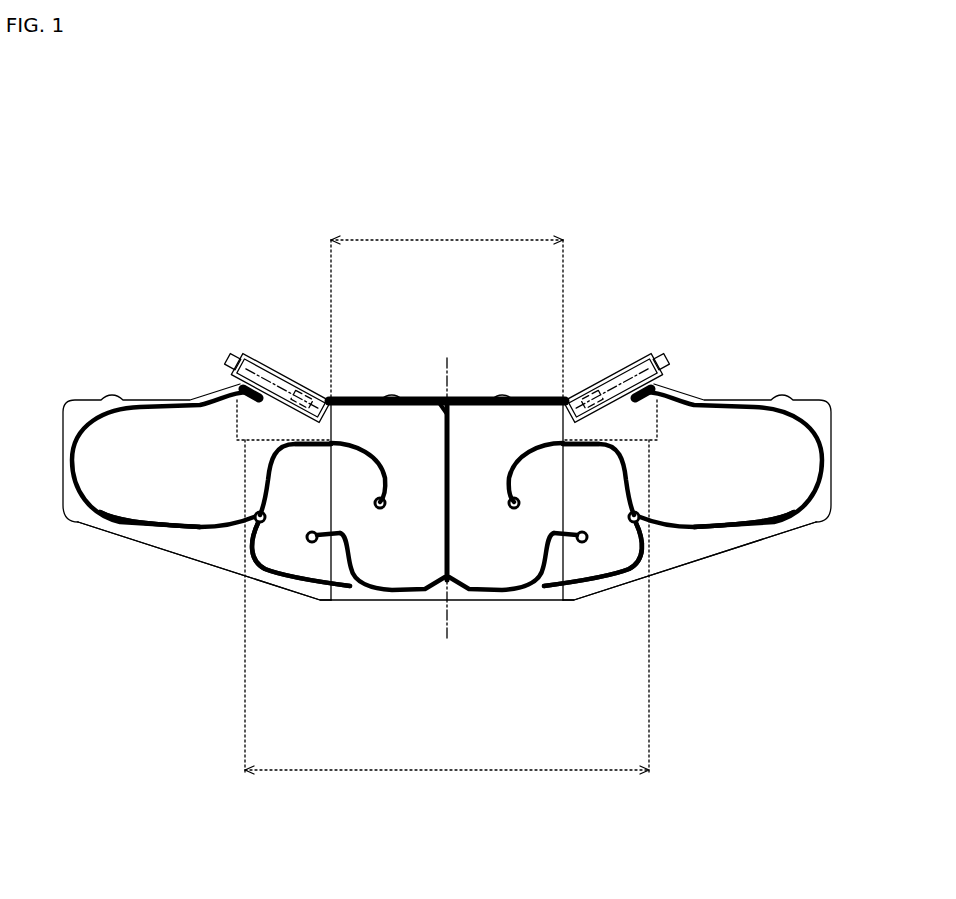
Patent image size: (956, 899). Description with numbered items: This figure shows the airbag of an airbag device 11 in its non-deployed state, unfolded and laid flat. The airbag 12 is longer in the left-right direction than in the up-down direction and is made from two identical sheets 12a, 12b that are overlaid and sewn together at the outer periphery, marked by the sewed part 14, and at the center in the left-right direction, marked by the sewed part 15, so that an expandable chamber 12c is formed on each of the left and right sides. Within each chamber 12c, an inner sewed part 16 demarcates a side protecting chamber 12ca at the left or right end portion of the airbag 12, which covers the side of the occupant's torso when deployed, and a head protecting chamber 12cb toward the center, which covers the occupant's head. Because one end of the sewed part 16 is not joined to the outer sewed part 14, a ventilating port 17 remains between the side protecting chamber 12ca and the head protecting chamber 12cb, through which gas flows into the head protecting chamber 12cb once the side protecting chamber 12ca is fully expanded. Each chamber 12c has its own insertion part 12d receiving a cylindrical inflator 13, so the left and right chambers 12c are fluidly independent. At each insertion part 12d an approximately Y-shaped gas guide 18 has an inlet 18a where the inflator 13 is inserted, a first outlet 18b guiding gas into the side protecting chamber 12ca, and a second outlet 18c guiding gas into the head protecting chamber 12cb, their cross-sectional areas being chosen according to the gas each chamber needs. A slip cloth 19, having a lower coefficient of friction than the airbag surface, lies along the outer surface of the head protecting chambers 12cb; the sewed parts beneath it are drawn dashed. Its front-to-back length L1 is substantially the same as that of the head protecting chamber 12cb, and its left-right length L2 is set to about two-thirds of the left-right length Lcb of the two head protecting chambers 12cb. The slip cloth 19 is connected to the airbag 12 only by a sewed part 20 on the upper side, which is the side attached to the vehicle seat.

The airbag device 11 is at (386, 318).
The airbag 12 is at (460, 397).
The sheet 12a is at (690, 540).
The sheet 12b is at (447, 561).
The chamber 12c is at (108, 636).
The side protecting chamber 12ca is at (165, 503).
The head protecting chamber 12cb is at (298, 500).
The insertion part 12d is at (229, 354).
The inflator 13 is at (286, 371).
The sewed part 14 is at (100, 508).
The sewed part 15 is at (447, 502).
The sewed part 16 is at (338, 449).
The ventilating port 17 is at (250, 510).
The gas guide 18 is at (265, 428).
The inlet 18a is at (225, 364).
The first outlet 18b is at (236, 420).
The second outlet 18c is at (334, 421).
The slip cloth 19 is at (480, 548).
The sewed part 20 is at (437, 397).
The length in the front-to-back direction L1 is at (424, 499).
The length in the left-right direction L2 is at (447, 229).
The length in the left-right direction of the two head protecting chambers Lcb is at (447, 607).